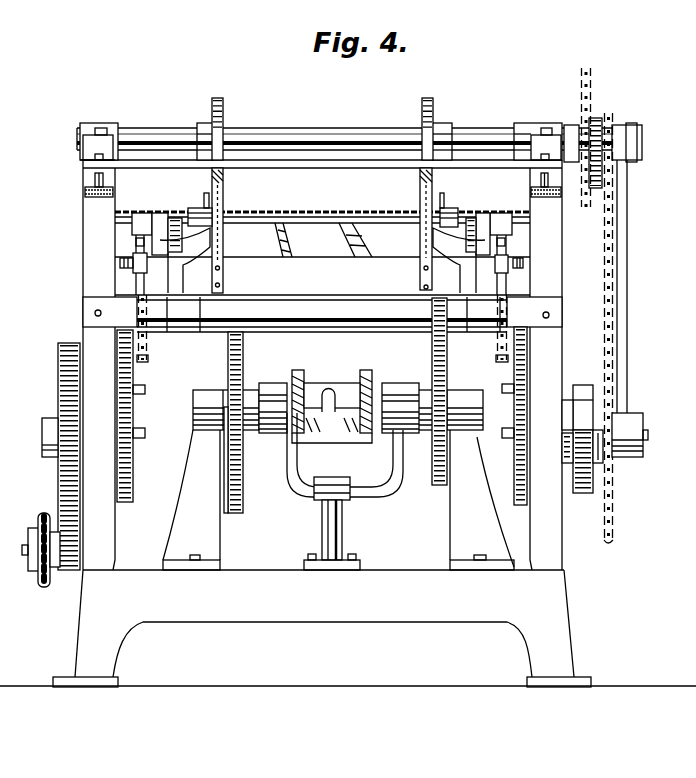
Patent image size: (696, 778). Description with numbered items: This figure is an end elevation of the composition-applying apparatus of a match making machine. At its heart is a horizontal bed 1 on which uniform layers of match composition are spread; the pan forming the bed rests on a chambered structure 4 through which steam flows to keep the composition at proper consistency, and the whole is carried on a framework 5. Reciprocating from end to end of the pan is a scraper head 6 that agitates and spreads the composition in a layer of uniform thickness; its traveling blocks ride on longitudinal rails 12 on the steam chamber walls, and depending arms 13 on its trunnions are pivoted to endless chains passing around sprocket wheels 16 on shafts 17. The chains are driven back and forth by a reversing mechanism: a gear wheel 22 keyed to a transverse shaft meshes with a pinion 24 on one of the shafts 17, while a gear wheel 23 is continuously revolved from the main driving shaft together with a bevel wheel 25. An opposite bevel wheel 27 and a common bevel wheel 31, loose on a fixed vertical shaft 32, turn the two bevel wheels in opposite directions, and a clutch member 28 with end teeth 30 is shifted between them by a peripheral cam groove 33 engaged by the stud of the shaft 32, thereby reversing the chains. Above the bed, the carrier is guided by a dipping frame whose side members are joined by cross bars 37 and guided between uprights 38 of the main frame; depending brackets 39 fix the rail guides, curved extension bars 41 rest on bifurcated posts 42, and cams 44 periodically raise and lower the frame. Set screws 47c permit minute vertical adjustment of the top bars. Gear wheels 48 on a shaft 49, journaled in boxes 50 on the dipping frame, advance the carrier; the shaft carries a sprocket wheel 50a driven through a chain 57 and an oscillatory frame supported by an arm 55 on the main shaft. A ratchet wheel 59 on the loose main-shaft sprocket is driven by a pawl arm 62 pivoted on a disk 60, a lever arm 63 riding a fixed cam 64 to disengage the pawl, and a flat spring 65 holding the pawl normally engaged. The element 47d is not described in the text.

The horizontal bed 1 is at (390, 257).
The chambered structure 4 is at (322, 280).
The framework 5 is at (322, 628).
The scraper head 6 is at (296, 212).
The longitudinal rails 12 is at (190, 258).
The depending arms 13 is at (137, 222).
The sprocket wheels 16 is at (149, 352).
The shafts 17 is at (272, 302).
The gear wheel 22 is at (448, 362).
The gear wheel 23 is at (228, 362).
The pinion 24 is at (445, 336).
The bevel wheel 25 is at (296, 375).
The bevel wheel 27 is at (372, 372).
The clutch member 28 is at (317, 383).
The teeth 30 is at (380, 400).
The common bevel wheel 31 is at (380, 465).
The fixed vertical shaft 32 is at (343, 540).
The peripheral cam groove 33 is at (332, 395).
The cross bars 37 is at (90, 166).
The uprights 38 is at (90, 216).
The depending brackets 39 is at (212, 170).
The curved extension bars 41 is at (224, 178).
The posts 42 is at (204, 195).
The cams 44 is at (131, 497).
The set screws 47c is at (95, 181).
The stop 47d is at (549, 177).
The gear wheels 48 is at (216, 98).
The shaft 49 is at (318, 131).
The boxes 50 is at (95, 124).
The sprocket wheel 50a is at (592, 104).
The arm 55 is at (628, 230).
The chain 57 is at (614, 277).
The ratchet wheel 59 is at (600, 400).
The disk 60 is at (582, 386).
The pawl arm 62 is at (607, 470).
The lever arm 63 is at (575, 446).
The cam 64 is at (570, 465).
The flat spring 65 is at (597, 440).